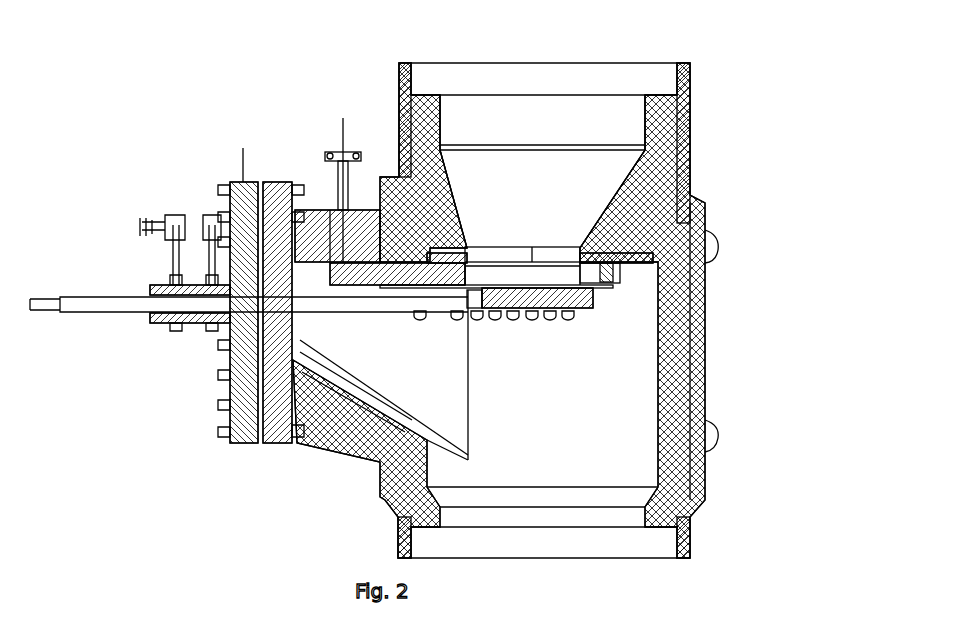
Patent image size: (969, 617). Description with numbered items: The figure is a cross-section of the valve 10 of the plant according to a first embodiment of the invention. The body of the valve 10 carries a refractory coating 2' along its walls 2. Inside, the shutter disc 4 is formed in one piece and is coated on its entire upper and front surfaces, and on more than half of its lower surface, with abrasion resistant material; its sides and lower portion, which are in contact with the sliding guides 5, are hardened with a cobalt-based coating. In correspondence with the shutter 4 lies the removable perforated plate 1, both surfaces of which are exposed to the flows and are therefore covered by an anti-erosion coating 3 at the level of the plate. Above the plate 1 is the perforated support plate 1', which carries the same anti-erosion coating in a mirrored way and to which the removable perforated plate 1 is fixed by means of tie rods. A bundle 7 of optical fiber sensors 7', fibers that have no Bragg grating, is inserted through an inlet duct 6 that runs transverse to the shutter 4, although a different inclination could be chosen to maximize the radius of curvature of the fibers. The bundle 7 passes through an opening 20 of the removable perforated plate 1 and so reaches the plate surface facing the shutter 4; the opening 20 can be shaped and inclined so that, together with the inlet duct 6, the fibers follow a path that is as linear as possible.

The removable perforated plate 1 is at (258, 406).
The perforated support plate 1' is at (717, 272).
The walls 2 is at (556, 310).
The refractory coating 2' is at (542, 127).
The anti-erosion coating 3 is at (615, 282).
The shutter disc 4 is at (592, 300).
The sliding guides 5 is at (377, 292).
The inlet duct 6 is at (327, 153).
The bundle of optical fiber sensors 7 is at (287, 138).
The optical fiber sensors 7' is at (496, 246).
The valve 10 is at (442, 282).
The opening 20 is at (412, 268).